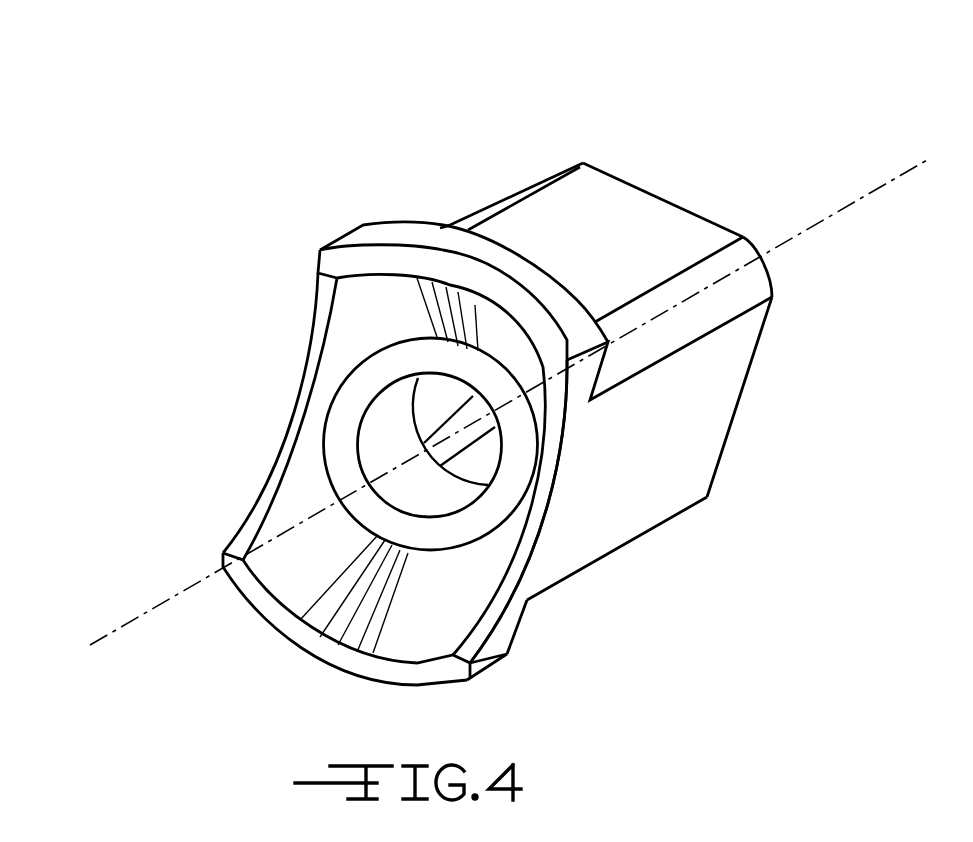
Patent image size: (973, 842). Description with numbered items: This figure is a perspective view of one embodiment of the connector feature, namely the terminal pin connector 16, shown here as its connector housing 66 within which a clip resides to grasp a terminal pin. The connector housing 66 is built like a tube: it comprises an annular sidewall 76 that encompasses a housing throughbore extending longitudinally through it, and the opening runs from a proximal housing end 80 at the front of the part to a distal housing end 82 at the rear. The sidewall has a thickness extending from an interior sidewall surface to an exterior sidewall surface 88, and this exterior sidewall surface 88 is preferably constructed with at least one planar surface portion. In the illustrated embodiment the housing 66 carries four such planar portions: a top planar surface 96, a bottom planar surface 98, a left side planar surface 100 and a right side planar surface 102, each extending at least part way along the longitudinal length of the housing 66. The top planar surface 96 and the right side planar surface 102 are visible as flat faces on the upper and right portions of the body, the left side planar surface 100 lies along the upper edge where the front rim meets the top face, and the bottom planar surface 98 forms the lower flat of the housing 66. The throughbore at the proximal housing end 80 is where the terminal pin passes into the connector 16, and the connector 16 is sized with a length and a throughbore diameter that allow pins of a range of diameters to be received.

The terminal pin connector 16 is at (203, 339).
The left side planar surface 100 is at (482, 202).
The distal housing end 82 is at (643, 190).
The top planar surface 96 is at (641, 242).
The right side planar surface 102 is at (699, 380).
The annular sidewall 76 is at (685, 413).
The connector housing 66 is at (703, 530).
The exterior sidewall surface 88 is at (593, 502).
The bottom planar surface 98 is at (548, 591).
The proximal housing end 80 is at (270, 480).